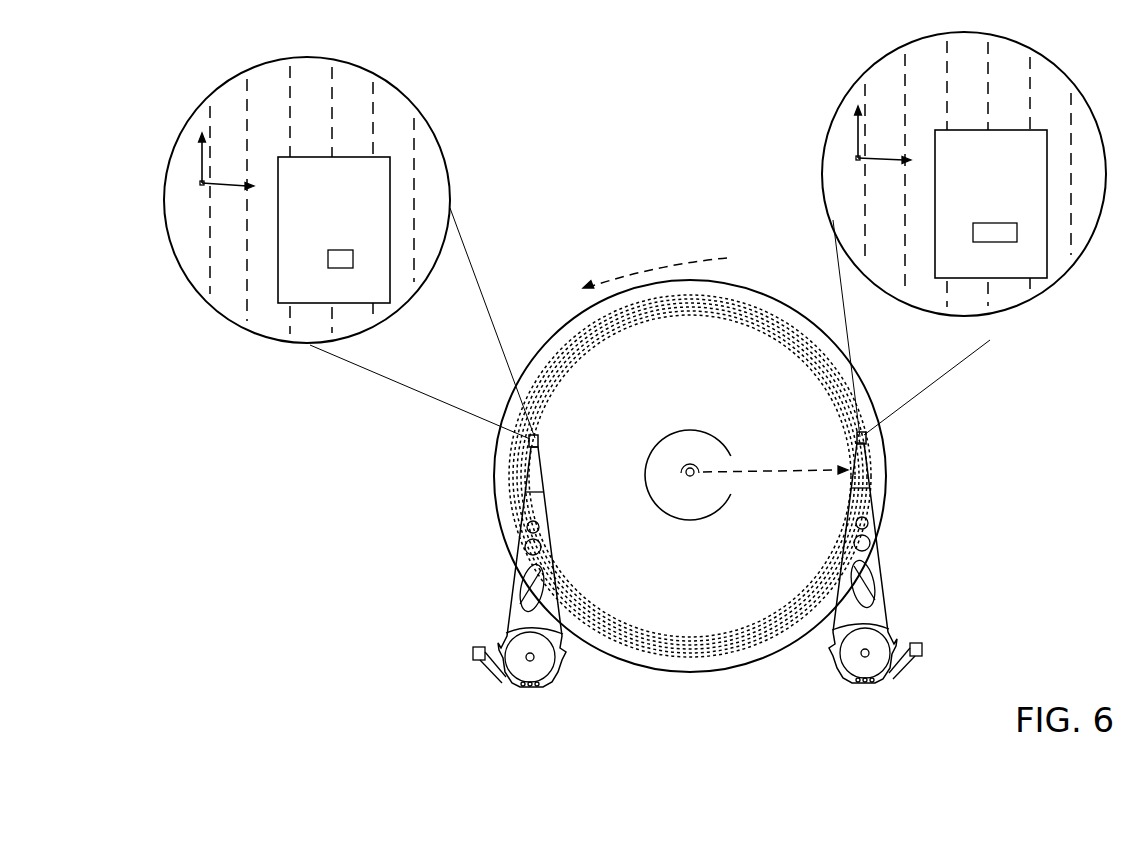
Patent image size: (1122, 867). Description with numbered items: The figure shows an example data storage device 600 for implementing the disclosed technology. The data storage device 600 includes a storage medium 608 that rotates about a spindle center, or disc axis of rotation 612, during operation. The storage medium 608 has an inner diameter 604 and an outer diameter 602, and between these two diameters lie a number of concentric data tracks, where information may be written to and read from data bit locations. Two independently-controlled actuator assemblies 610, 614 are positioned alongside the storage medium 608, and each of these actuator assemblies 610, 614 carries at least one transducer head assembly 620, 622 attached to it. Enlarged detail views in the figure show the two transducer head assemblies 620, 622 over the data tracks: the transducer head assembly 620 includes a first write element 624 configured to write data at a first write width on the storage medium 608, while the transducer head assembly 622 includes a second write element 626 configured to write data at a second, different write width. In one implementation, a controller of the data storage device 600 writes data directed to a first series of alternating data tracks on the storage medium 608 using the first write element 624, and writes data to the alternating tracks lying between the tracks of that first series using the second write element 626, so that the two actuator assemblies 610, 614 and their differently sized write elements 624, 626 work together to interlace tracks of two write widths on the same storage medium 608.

The data storage device 600 is at (606, 90).
The outer diameter 602 is at (754, 306).
The inner diameter 604 is at (647, 481).
The storage medium 608 is at (561, 328).
The actuator assembly 610 is at (878, 532).
The disc axis of rotation 612 is at (680, 464).
The actuator assembly 614 is at (517, 573).
The transducer head assembly 620 is at (970, 244).
The transducer head assembly 622 is at (351, 259).
The first write element 624 is at (995, 232).
The second write element 626 is at (340, 250).